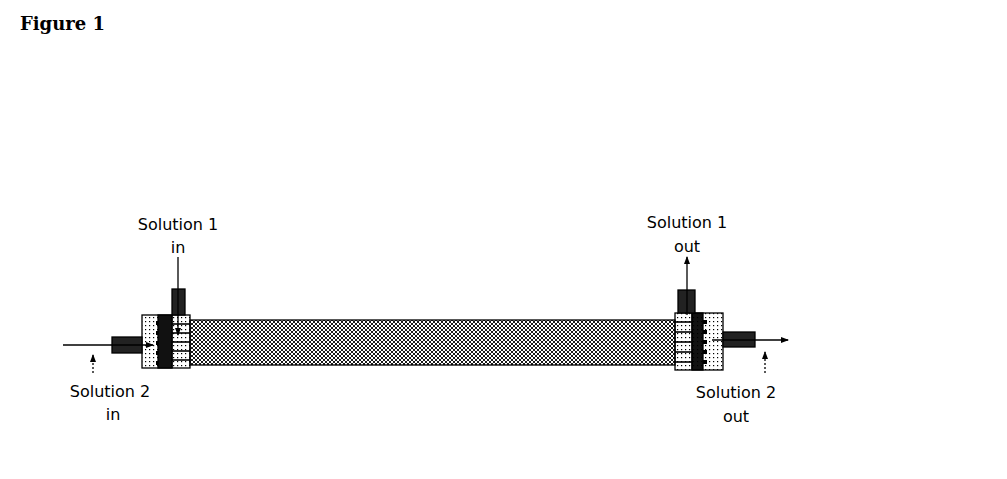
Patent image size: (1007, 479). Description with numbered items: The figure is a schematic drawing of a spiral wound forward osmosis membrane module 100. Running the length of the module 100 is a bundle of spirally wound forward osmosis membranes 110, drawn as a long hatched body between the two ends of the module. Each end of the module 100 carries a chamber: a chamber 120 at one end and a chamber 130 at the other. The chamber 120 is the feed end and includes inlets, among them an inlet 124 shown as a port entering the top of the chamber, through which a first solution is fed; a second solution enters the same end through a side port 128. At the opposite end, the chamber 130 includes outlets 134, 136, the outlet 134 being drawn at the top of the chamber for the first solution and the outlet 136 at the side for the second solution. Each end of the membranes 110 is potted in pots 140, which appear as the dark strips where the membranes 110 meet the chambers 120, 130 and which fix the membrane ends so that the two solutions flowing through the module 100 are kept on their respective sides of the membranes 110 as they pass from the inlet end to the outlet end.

The spiral wound forward osmosis membrane module 100 is at (157, 137).
The spirally wound forward osmosis membranes 110 is at (376, 321).
The chamber 120 is at (150, 327).
The inlet 124 is at (187, 295).
The solution 2 inlet port 128 is at (130, 337).
The chamber 130 is at (712, 320).
The outlet 134 is at (678, 295).
The outlet 136 is at (745, 333).
The pots 140 is at (165, 369).